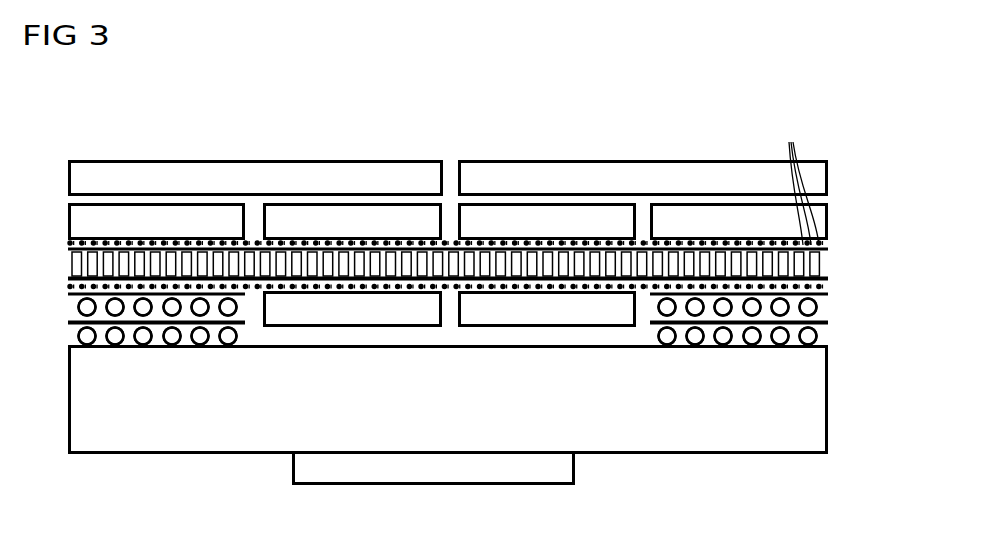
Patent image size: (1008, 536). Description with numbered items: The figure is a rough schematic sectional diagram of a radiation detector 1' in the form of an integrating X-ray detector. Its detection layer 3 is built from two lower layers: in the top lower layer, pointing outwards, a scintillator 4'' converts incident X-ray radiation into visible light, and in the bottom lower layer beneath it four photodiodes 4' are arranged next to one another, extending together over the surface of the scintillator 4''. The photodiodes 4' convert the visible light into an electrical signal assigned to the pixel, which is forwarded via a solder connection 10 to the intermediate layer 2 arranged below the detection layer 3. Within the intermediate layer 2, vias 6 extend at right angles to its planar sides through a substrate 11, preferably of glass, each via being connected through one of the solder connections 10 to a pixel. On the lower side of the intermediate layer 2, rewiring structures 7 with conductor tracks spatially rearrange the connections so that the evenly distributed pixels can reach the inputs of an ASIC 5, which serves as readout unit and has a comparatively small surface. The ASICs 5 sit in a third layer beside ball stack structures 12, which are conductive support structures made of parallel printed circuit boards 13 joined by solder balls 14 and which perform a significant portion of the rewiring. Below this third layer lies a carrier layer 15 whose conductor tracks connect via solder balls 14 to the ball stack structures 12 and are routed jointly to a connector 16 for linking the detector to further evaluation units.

The radiation detector 1' is at (851, 57).
The intermediate layer 2 is at (858, 270).
The detection layer 3 is at (846, 160).
The photodiodes 4' is at (448, 177).
The scintillator 4'' is at (448, 148).
The ASIC 5 is at (357, 312).
The vias 6 is at (90, 262).
The rewiring structures 7 is at (72, 286).
The solder connections 10 is at (798, 180).
The substrate 11 is at (253, 265).
The ball stack structures 12 is at (152, 362).
The printed circuit boards 13 is at (829, 296).
The solder balls 14 is at (806, 340).
The carrier layer 15 is at (759, 440).
The connector 16 is at (564, 468).